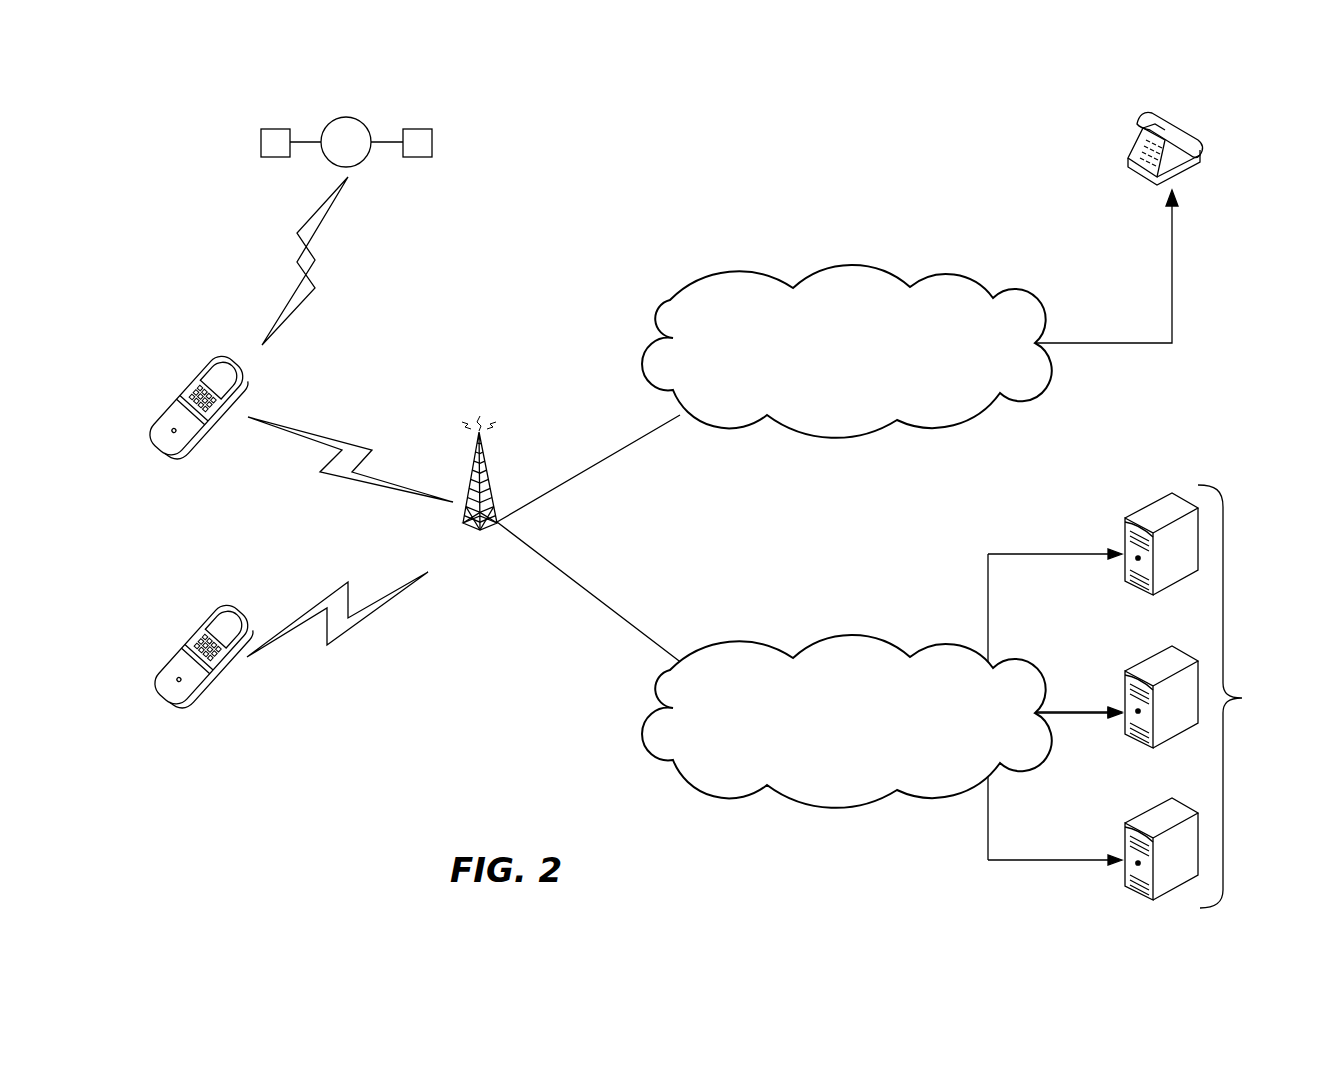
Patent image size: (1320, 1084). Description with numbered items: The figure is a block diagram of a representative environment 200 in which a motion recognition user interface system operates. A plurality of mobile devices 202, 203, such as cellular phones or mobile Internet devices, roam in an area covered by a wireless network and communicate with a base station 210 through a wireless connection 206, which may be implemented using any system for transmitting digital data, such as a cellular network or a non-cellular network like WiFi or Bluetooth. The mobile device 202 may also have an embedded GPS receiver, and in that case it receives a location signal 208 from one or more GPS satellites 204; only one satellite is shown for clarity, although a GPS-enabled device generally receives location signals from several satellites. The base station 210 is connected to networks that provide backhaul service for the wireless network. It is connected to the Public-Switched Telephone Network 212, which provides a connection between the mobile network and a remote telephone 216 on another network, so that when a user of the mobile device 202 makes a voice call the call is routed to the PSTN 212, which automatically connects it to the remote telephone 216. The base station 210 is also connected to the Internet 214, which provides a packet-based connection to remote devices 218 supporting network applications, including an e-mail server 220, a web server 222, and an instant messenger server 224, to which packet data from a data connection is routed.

The representative environment 200 is at (318, 740).
The mobile device 202 is at (238, 390).
The mobile device 203 is at (218, 610).
The GPS satellite 204 is at (368, 126).
The wireless connection 206 is at (378, 487).
The location signal 208 is at (320, 273).
The base station 210 is at (493, 533).
The Public-Switched Telephone Network (PSTN) 212 is at (753, 270).
The Internet 214 is at (753, 640).
The remote telephone 216 is at (1128, 160).
The remote devices 218 is at (1238, 696).
The e-mail server 220 is at (1132, 513).
The web server 222 is at (1132, 666).
The instant messenger server 224 is at (1132, 820).